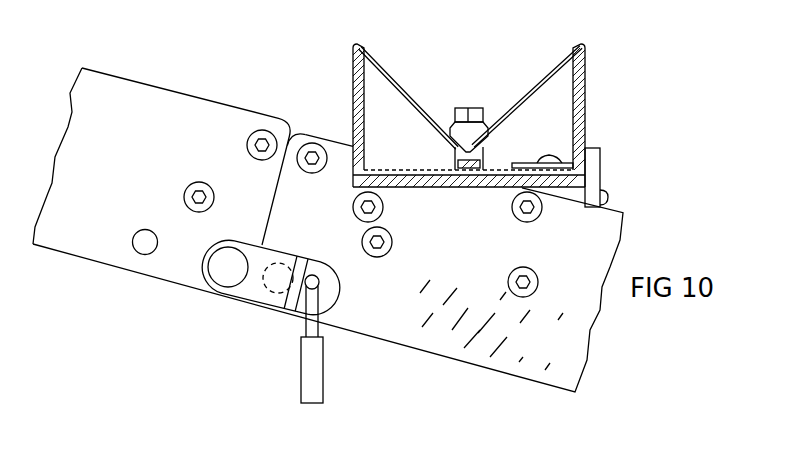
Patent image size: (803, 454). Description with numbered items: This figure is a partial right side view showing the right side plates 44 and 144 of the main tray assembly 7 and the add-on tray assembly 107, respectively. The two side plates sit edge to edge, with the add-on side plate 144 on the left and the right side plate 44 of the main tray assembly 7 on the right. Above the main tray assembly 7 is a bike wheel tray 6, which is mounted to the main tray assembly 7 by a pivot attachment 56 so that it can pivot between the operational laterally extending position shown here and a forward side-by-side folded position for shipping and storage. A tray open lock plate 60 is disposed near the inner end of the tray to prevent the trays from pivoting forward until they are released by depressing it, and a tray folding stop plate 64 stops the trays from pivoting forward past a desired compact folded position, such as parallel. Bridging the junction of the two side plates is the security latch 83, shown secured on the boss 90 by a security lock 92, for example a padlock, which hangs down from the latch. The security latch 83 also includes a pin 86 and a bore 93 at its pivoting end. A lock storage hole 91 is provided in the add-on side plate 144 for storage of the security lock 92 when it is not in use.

The bike wheel tray 6 is at (532, 93).
The main tray assembly 7 is at (388, 364).
The right side plate 44 is at (437, 262).
The pivot attachment 56 is at (473, 112).
The tray open lock plate 60 is at (522, 158).
The tray folding stop plate 64 is at (595, 160).
The security latch 83 is at (273, 255).
The pin 86 is at (319, 281).
The boss 90 is at (270, 289).
The lock storage hole 91 is at (144, 230).
The security lock 92 is at (308, 369).
The bore 93 is at (221, 275).
The add-on tray assembly 107 is at (135, 302).
The add-on side plate 144 is at (120, 161).